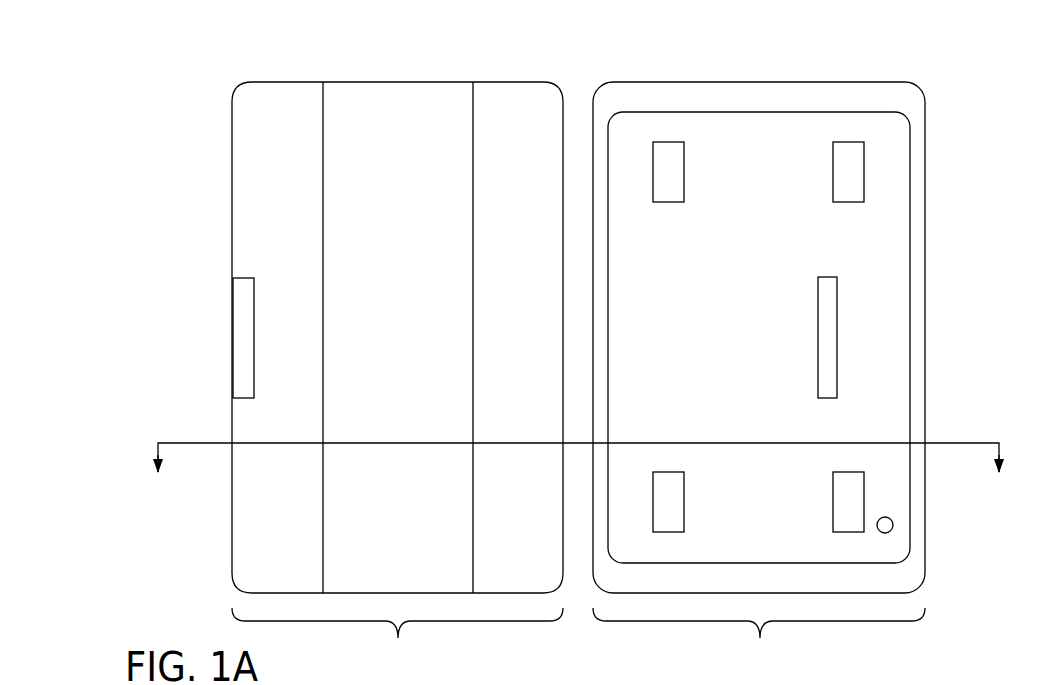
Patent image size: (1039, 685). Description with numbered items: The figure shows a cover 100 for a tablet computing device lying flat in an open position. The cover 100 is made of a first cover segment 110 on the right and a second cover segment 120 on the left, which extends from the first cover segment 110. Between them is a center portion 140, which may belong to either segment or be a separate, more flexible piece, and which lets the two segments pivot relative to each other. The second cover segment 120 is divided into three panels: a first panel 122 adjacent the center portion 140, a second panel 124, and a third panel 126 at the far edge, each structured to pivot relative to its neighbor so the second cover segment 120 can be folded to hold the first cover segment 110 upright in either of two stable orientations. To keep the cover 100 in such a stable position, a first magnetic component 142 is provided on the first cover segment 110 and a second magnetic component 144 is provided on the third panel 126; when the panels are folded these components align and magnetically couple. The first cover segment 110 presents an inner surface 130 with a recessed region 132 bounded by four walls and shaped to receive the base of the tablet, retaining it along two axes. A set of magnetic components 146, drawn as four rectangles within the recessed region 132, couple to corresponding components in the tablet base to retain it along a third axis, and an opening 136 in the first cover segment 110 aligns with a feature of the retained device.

The cover 100 is at (878, 43).
The first cover segment 110 is at (797, 354).
The second cover segment 120 is at (350, 346).
The first panel 122 is at (532, 110).
The second panel 124 is at (403, 110).
The third panel 126 is at (262, 110).
The inner surface 130 is at (668, 97).
The recessed region 132 is at (895, 233).
The opening 136 is at (895, 531).
The center portion 140 is at (580, 103).
The first magnetic component 142 is at (821, 376).
The second magnetic component 144 is at (247, 328).
The set of magnetic components 146 is at (848, 500).